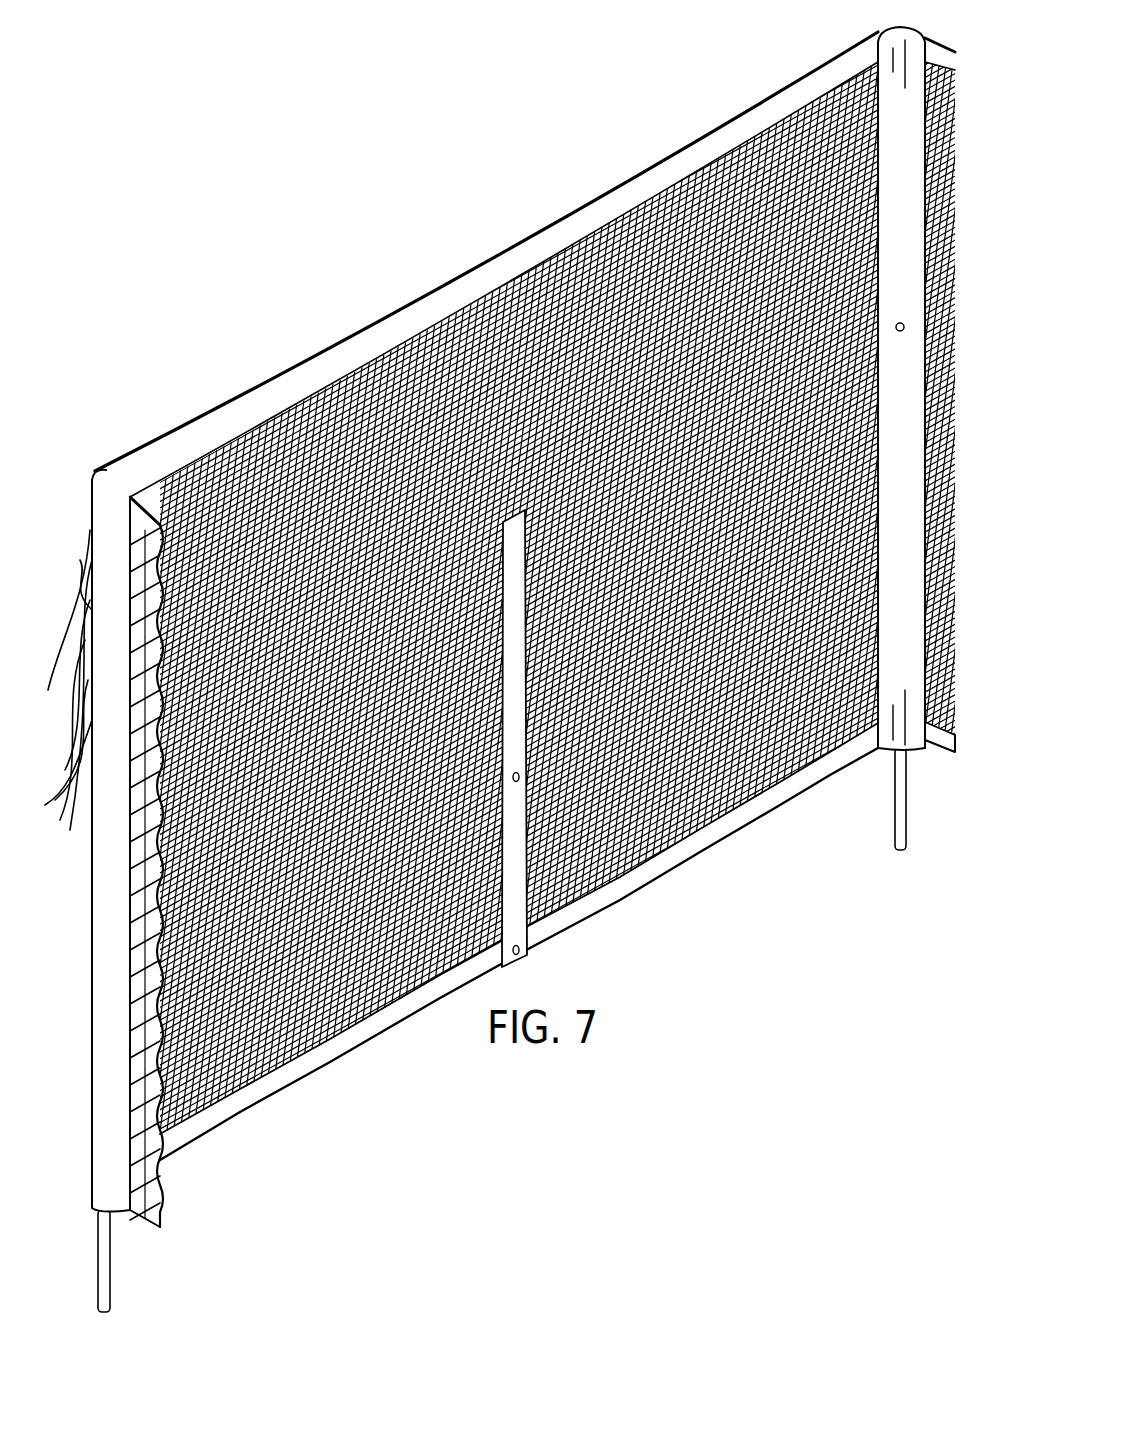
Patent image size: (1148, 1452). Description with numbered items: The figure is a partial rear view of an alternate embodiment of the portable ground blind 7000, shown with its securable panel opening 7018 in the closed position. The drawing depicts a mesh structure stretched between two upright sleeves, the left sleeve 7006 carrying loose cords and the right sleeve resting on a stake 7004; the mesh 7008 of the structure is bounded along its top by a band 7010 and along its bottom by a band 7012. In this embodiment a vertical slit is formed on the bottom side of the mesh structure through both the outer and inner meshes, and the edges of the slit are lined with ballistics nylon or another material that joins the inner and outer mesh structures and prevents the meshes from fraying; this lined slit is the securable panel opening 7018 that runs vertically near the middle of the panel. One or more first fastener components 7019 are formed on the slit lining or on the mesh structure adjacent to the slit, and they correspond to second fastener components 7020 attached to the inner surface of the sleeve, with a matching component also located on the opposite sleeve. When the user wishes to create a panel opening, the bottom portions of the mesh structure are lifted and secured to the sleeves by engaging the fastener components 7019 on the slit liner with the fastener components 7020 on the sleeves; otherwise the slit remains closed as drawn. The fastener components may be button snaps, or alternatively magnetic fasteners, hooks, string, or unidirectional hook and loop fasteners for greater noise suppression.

The portable ground blind 7000 is at (383, 186).
The stake 7004 is at (896, 820).
The post sleeve 7006 is at (878, 30).
The mesh net 7008 is at (333, 1020).
The top band 7010 is at (352, 342).
The bottom band 7012 is at (270, 1094).
The securable panel opening 7018 is at (522, 614).
The first fastener components 7019 is at (521, 777).
The second fastener components 7020 is at (896, 327).